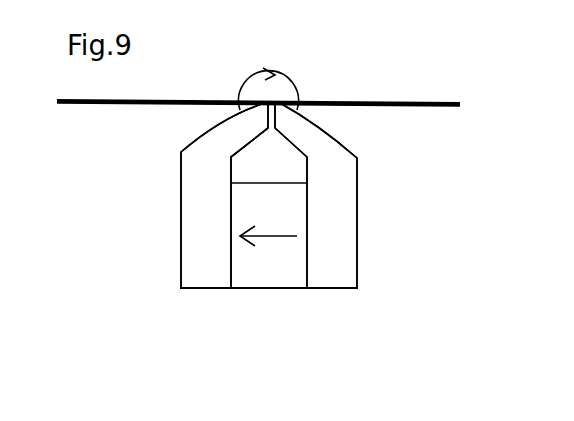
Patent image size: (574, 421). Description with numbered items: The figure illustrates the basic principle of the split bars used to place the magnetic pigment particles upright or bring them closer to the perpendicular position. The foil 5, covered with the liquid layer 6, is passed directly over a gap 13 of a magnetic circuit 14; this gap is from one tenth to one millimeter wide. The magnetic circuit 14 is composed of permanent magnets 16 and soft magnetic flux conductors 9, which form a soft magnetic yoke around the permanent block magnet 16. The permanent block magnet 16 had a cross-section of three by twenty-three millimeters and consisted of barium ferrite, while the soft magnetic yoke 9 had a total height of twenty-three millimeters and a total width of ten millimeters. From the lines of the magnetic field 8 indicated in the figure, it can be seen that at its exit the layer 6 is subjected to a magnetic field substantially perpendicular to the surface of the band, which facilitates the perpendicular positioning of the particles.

The foil 5 is at (393, 106).
The liquid layer 6 is at (423, 102).
The lines of the magnetic field 8 is at (253, 78).
The soft magnetic flux conductors 9 is at (207, 183).
The gap 13 is at (277, 107).
The magnetic circuit 14 is at (332, 263).
The permanent magnets 16 is at (268, 262).